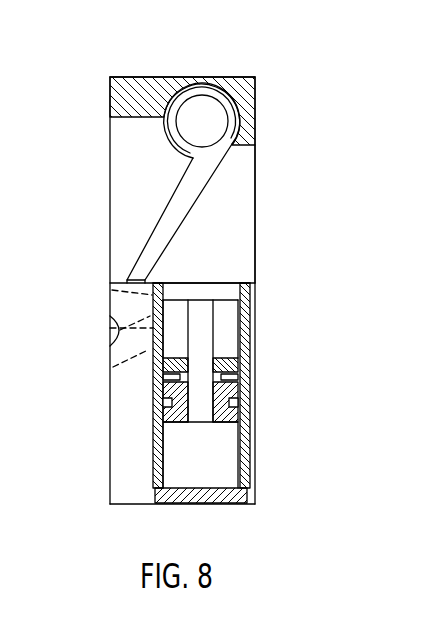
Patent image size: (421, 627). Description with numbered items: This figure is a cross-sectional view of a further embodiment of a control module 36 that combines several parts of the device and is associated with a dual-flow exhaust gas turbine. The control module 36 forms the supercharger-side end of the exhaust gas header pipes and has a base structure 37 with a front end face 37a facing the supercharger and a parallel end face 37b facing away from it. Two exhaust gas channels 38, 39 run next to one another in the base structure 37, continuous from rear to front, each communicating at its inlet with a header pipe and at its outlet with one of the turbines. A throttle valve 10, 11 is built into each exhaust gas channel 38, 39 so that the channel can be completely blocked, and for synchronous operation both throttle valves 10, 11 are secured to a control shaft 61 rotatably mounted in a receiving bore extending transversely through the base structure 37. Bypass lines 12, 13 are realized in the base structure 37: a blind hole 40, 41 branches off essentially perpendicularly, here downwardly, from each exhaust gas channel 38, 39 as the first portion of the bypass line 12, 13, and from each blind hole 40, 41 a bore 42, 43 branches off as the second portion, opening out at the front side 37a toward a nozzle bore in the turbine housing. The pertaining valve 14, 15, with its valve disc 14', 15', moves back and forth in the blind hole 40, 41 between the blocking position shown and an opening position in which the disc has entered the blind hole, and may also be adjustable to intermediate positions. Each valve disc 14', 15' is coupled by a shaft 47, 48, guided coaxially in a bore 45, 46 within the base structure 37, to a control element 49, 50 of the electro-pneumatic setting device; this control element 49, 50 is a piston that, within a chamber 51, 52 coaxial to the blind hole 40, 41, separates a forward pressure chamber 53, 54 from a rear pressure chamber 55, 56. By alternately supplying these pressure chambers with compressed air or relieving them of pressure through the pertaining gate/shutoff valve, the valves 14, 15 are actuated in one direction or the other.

The throttle valve 10 is at (138, 183).
The throttle valve 11 is at (180, 205).
The bypass line 12 is at (118, 303).
The bypass line 13 is at (117, 360).
The valve 14 is at (239, 267).
The valve 15 is at (239, 267).
The valve disc 14' is at (239, 260).
The valve disc 15' is at (239, 260).
The control module 36 is at (224, 67).
The base structure 37 is at (142, 98).
The front end face 37a is at (110, 113).
The end face 37b is at (255, 103).
The exhaust gas channel 38 is at (283, 203).
The exhaust gas channel 39 is at (250, 178).
The blind hole 40 is at (228, 383).
The blind hole 41 is at (240, 311).
The bore 42 is at (118, 322).
The bore 43 is at (117, 350).
The bore 45 is at (235, 373).
The bore 46 is at (210, 365).
The shaft 47 is at (256, 361).
The shaft 48 is at (203, 330).
The control element 49 is at (243, 451).
The control element 50 is at (240, 415).
The chamber 51 is at (181, 385).
The chamber 52 is at (163, 462).
The forward pressure chamber 53 is at (222, 401).
The forward pressure chamber 54 is at (233, 378).
The rear pressure chamber 55 is at (231, 477).
The rear pressure chamber 56 is at (222, 448).
The control shaft 61 is at (202, 118).